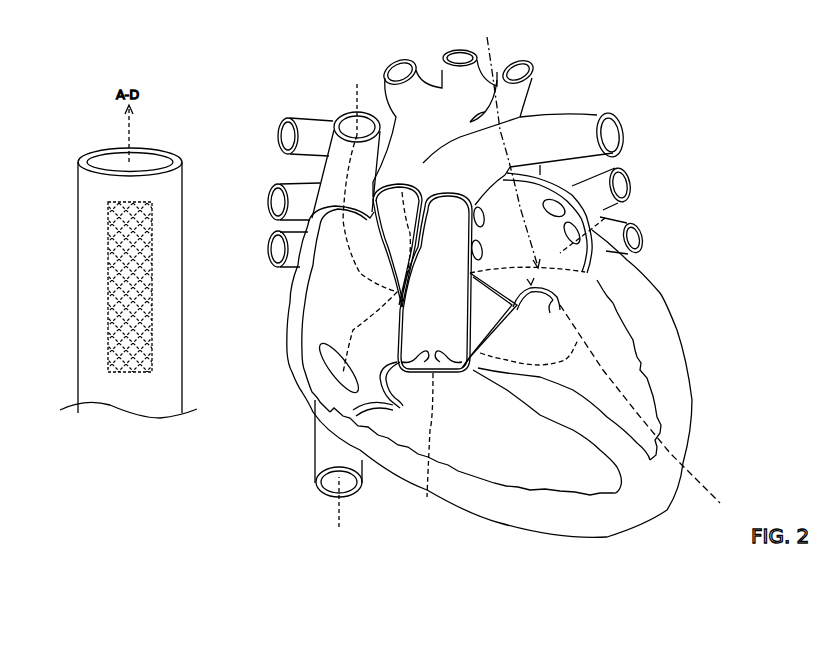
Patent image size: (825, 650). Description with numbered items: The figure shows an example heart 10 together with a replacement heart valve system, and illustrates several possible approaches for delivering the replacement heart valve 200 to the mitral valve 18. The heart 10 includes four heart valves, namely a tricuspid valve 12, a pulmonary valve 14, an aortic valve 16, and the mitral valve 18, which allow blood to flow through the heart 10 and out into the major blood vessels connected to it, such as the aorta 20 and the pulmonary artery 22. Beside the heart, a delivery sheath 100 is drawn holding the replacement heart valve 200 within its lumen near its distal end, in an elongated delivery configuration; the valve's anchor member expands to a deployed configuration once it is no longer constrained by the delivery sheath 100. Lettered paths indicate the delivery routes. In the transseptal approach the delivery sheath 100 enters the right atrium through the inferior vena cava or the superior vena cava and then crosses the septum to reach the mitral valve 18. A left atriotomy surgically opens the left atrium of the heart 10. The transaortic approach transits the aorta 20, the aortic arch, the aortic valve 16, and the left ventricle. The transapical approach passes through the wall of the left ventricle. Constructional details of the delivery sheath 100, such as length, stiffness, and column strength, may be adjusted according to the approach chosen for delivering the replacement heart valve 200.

The heart 10 is at (690, 113).
The tricuspid valve 12 is at (370, 392).
The pulmonary valve 14 is at (427, 497).
The aortic valve 16 is at (490, 347).
The mitral valve 18 is at (610, 216).
The aorta 20 is at (480, 103).
The pulmonary artery 22 is at (570, 132).
The delivery sheath 100 is at (182, 287).
The replacement heart valve 200 is at (152, 238).